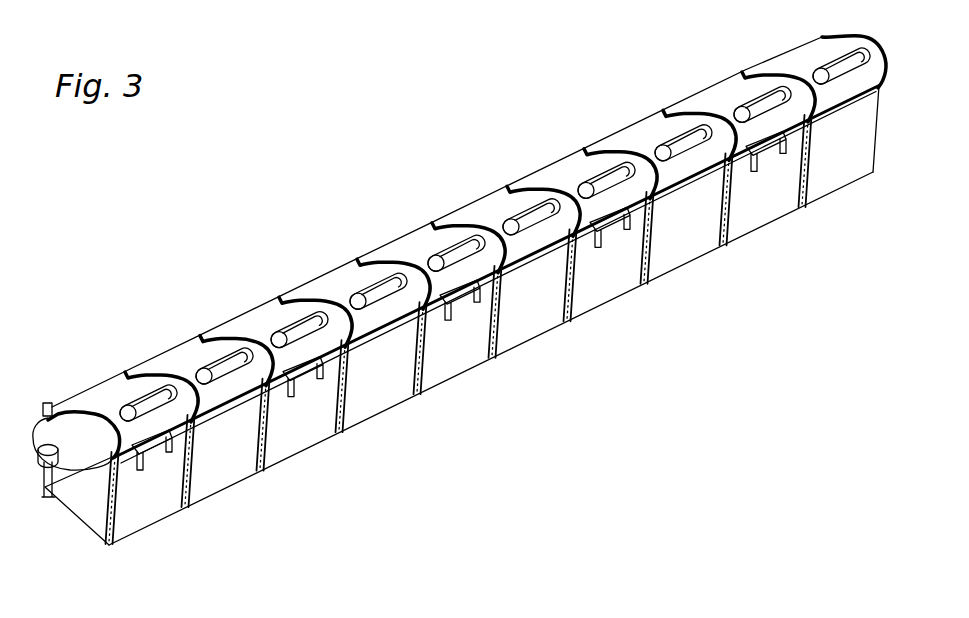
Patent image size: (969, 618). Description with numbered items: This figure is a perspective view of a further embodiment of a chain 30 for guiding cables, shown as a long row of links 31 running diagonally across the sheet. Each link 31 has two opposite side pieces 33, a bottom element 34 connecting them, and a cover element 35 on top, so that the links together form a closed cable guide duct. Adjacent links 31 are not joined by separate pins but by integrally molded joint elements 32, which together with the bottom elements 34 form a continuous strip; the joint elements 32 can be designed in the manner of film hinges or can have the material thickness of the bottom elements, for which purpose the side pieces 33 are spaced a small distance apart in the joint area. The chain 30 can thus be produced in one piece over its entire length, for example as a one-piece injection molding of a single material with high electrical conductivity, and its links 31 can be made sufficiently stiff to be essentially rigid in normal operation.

The chain 30 is at (603, 355).
The link 31 is at (762, 212).
The joint element 32 is at (495, 360).
The side piece 33 is at (160, 510).
The bottom element 34 is at (93, 502).
The cover element 35 is at (117, 390).